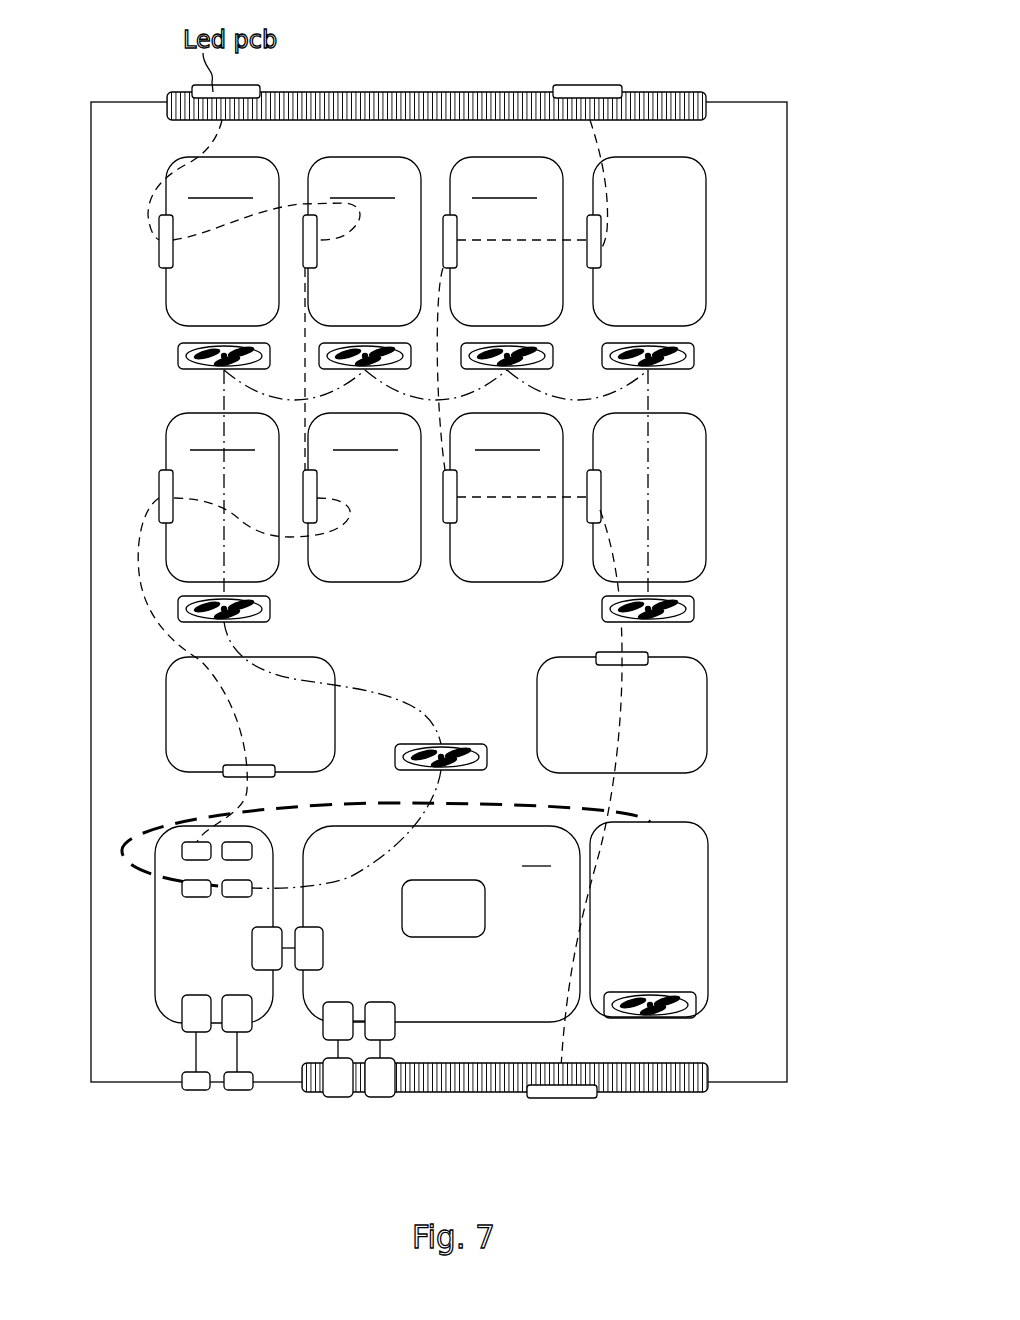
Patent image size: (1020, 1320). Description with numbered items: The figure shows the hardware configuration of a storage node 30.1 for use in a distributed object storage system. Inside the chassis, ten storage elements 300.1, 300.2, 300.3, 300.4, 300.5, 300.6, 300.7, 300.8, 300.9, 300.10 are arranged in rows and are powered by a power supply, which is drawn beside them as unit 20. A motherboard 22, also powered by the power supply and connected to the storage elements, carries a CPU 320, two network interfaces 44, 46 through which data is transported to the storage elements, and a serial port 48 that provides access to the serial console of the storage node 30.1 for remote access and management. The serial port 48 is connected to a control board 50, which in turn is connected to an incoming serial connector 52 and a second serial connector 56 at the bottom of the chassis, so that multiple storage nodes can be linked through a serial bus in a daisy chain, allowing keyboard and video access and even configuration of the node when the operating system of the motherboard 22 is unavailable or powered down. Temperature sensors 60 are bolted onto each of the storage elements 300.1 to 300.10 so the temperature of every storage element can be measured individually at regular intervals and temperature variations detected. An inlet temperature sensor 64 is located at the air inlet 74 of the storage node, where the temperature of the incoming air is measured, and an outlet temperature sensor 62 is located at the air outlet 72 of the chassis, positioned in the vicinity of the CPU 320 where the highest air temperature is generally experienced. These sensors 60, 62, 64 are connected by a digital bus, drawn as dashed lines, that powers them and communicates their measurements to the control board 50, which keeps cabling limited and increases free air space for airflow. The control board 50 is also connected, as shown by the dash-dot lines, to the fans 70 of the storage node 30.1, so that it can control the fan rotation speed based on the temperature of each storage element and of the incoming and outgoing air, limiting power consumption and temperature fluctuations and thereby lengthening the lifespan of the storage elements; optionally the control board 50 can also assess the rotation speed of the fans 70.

The storage node 30.1 is at (110, 118).
The air outlet 72 is at (359, 92).
The outlet temperature sensor 62 is at (575, 92).
The temperature sensor 60 is at (159, 232).
The storage element 300.1 is at (647, 255).
The storage element 300.2 is at (506, 241).
The storage element 300.3 is at (364, 241).
The storage element 300.4 is at (222, 241).
The storage element 300.5 is at (648, 515).
The storage element 300.6 is at (506, 497).
The storage element 300.7 is at (364, 497).
The storage element 300.8 is at (222, 497).
The storage element 300.9 is at (672, 740).
The storage element 300.10 is at (170, 704).
The fan 70 is at (178, 361).
The control board 50 is at (165, 938).
The incoming serial connector 52 is at (192, 1090).
The external connector 56 is at (240, 1090).
The motherboard 22 is at (441, 924).
The CPU 320 is at (473, 925).
The power supply unit 20 is at (652, 918).
The serial port 48 is at (310, 935).
The network interface 46 is at (347, 1002).
The network interface 44 is at (387, 1012).
The inlet temperature sensor 64 is at (477, 1092).
The air inlet 74 is at (555, 1100).